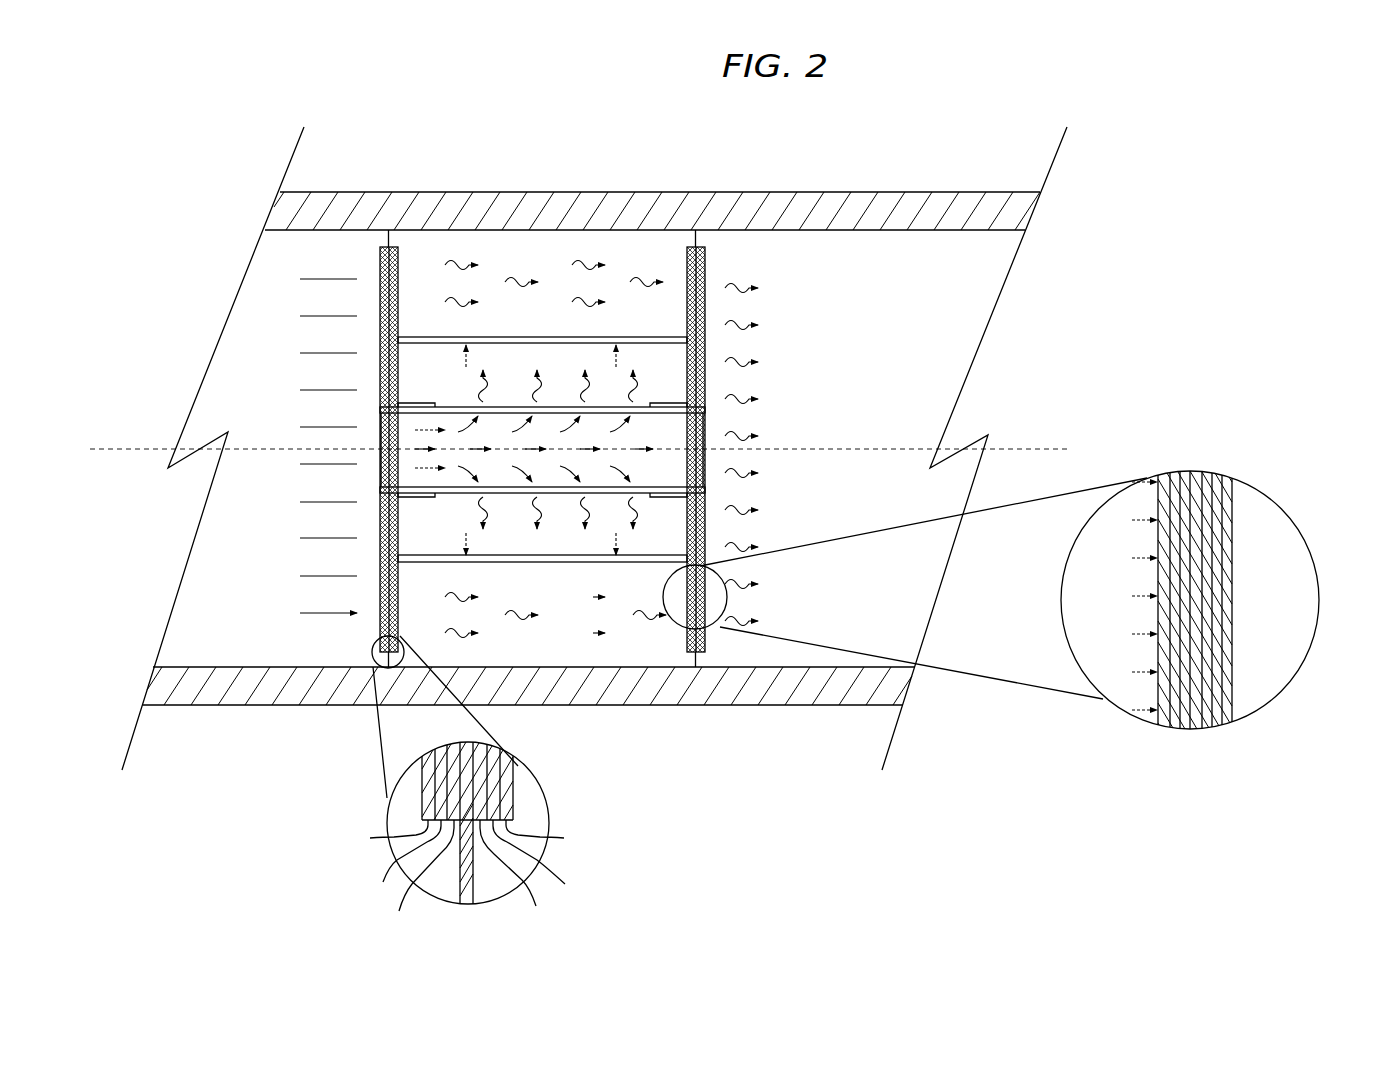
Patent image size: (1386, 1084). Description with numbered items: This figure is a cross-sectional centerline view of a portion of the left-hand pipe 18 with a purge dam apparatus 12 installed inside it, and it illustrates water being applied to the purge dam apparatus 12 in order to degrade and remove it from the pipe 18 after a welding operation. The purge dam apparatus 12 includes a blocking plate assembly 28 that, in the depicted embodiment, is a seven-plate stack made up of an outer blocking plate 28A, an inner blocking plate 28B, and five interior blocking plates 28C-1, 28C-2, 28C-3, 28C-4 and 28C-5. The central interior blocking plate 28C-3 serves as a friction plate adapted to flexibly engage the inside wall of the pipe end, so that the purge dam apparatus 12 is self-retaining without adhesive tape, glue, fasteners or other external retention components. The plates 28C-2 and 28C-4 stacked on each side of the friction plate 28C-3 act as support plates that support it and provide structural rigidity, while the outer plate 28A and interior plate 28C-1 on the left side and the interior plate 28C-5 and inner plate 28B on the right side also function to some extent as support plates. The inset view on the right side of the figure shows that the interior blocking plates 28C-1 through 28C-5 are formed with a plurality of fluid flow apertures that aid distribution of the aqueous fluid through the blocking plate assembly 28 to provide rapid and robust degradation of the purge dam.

The purge dam apparatus 12 is at (800, 296).
The left-hand pipe 18 is at (240, 283).
The blocking plate assembly 28 is at (1322, 577).
The outer blocking plate 28A is at (388, 803).
The inner blocking plate 28B is at (548, 803).
The interior blocking plate 28C-1 is at (392, 821).
The support plate 28C-2 is at (411, 837).
The friction plate 28C-3 is at (478, 895).
The support plate 28C-4 is at (525, 829).
The interior blocking plate 28C-5 is at (548, 818).